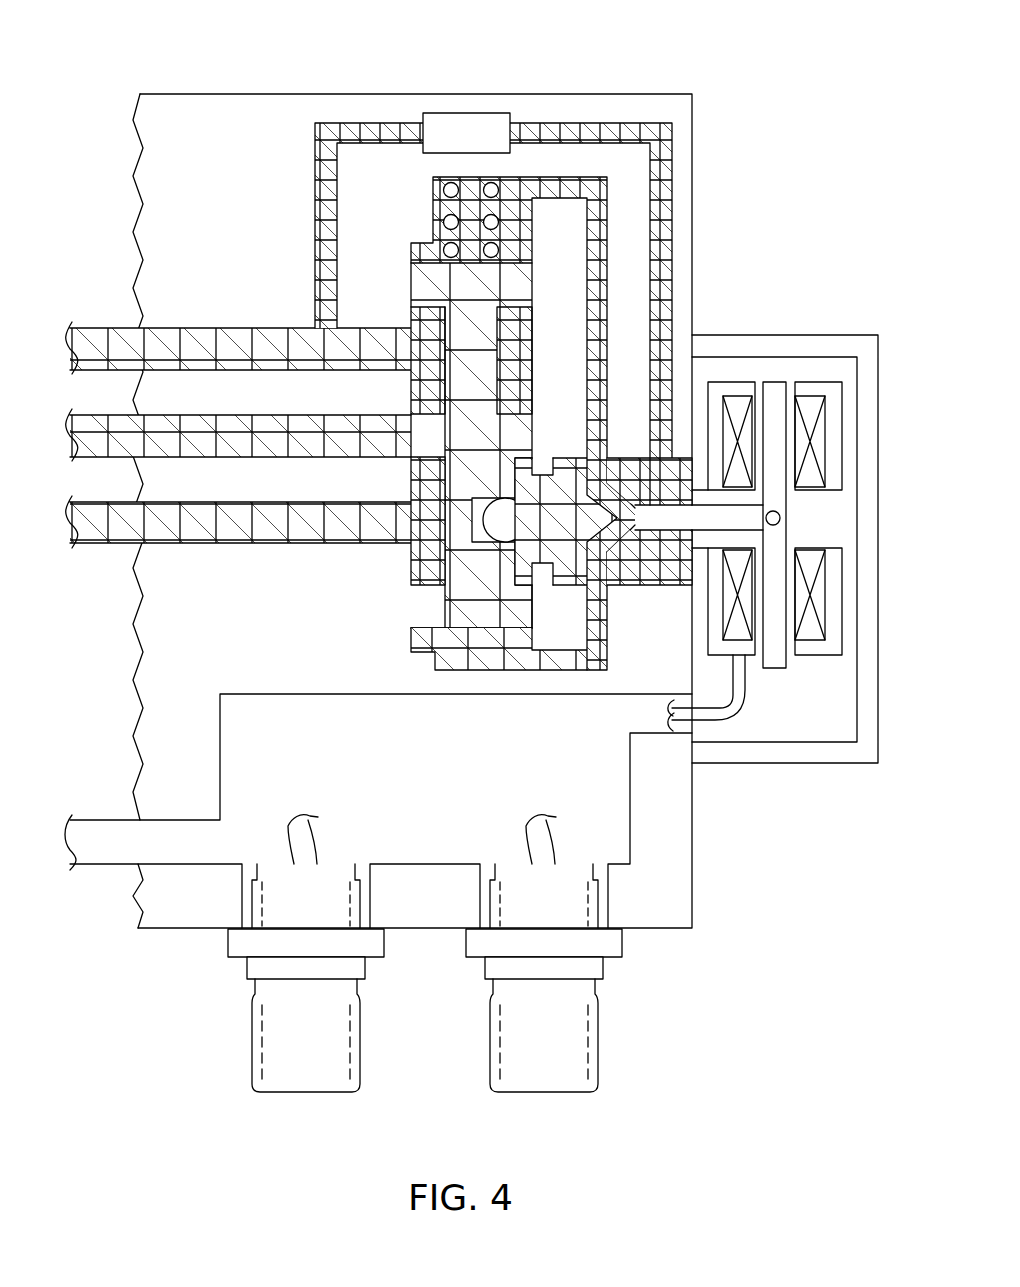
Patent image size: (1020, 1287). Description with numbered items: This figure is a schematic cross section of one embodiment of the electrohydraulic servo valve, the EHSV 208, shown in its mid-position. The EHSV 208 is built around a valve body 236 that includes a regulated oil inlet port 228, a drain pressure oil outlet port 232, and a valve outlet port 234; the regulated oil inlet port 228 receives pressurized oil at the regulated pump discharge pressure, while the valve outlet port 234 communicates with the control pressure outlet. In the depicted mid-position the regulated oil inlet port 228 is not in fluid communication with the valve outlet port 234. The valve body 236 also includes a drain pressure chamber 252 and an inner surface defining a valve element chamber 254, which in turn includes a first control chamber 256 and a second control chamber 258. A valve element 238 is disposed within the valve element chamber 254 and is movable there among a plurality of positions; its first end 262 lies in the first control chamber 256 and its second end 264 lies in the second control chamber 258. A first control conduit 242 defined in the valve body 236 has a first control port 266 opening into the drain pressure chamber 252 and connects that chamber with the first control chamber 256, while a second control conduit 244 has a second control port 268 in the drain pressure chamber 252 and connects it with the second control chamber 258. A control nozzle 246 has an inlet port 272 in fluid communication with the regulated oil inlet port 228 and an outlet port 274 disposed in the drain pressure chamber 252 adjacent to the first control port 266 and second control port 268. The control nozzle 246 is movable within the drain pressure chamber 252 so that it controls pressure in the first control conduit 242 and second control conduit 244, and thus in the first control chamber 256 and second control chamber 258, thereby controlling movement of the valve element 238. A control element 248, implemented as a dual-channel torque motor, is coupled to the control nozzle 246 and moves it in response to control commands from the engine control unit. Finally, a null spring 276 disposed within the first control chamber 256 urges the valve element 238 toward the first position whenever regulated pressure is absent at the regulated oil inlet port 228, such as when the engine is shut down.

The electrohydraulic servo valve 208 is at (475, 392).
The regulated oil inlet port 228 is at (72, 349).
The drain pressure oil outlet port 232 is at (74, 522).
The valve outlet port 234 is at (72, 435).
The valve body 236 is at (167, 93).
The valve element 238 is at (497, 450).
The first control conduit 242 is at (595, 228).
The second control conduit 244 is at (597, 648).
The control nozzle 246 is at (660, 512).
The control element 248 is at (880, 550).
The drain pressure chamber 252 is at (572, 583).
The valve element chamber 254 is at (425, 520).
The first control chamber 256 is at (540, 172).
The second control chamber 258 is at (420, 640).
The first end 262 is at (410, 290).
The second end 264 is at (410, 603).
The first control port 266 is at (610, 497).
The second control port 268 is at (611, 540).
The inlet port 272 is at (662, 463).
The outlet port 274 is at (642, 520).
The null spring 276 is at (447, 188).